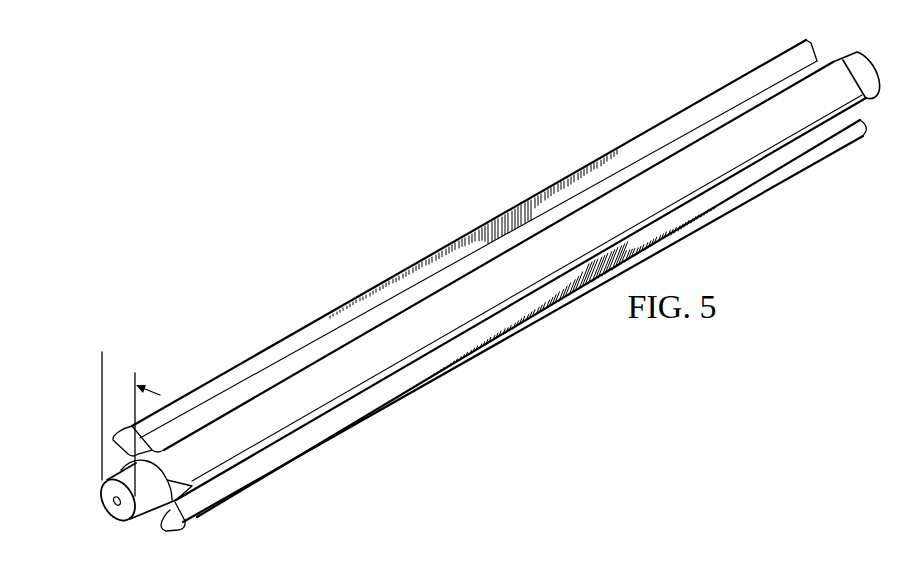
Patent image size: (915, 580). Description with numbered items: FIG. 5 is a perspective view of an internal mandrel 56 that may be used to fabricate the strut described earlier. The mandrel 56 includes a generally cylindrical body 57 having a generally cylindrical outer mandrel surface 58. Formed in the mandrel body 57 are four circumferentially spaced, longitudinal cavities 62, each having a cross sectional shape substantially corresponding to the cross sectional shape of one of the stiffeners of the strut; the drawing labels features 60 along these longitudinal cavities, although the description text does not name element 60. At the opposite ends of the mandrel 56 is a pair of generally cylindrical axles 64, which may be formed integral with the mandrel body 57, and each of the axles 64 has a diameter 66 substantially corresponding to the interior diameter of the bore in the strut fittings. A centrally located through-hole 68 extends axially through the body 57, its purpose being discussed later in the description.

The internal mandrel 56 is at (419, 231).
The mandrel body 57 is at (712, 142).
The outer mandrel surface 58 is at (350, 350).
The fin 60 is at (218, 388).
The longitudinal cavities 62 is at (215, 500).
The axles 64 is at (107, 488).
The diameter 66 is at (96, 357).
The through-hole 68 is at (113, 503).